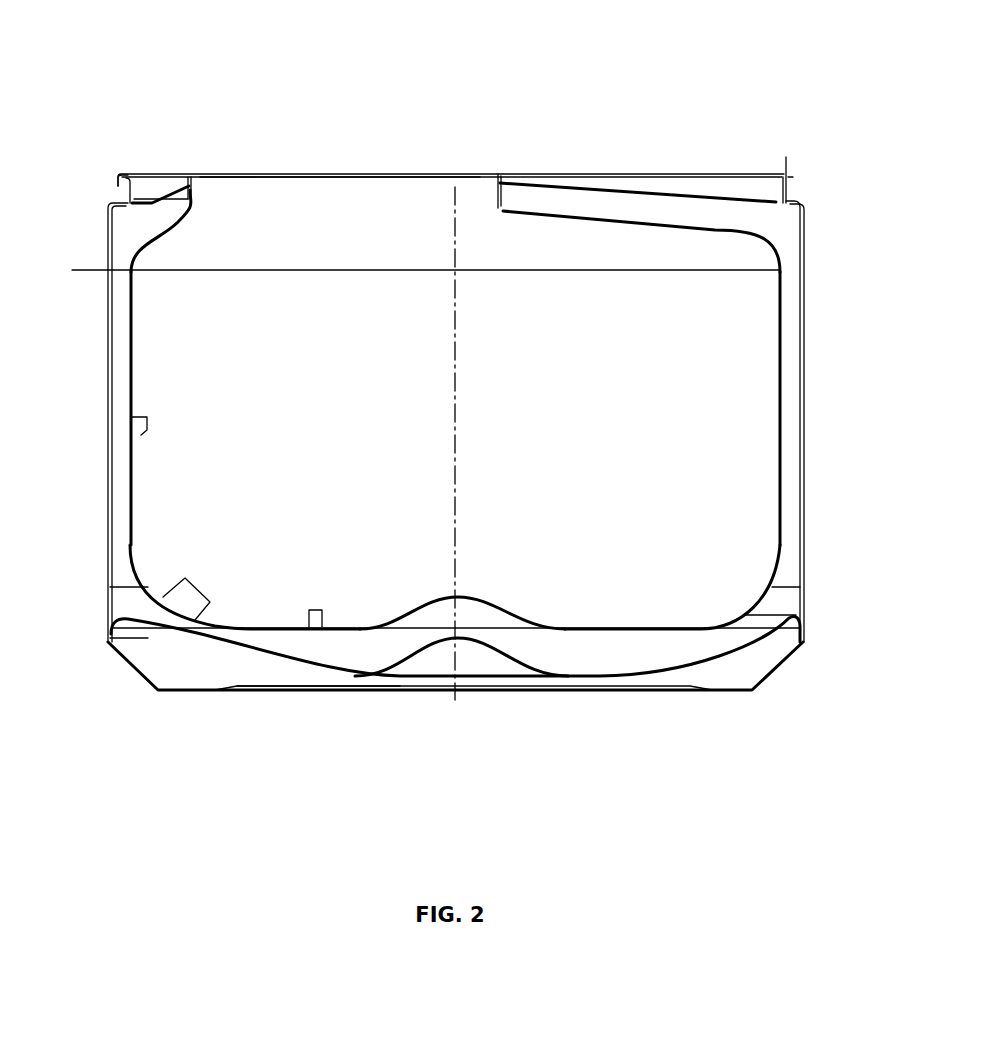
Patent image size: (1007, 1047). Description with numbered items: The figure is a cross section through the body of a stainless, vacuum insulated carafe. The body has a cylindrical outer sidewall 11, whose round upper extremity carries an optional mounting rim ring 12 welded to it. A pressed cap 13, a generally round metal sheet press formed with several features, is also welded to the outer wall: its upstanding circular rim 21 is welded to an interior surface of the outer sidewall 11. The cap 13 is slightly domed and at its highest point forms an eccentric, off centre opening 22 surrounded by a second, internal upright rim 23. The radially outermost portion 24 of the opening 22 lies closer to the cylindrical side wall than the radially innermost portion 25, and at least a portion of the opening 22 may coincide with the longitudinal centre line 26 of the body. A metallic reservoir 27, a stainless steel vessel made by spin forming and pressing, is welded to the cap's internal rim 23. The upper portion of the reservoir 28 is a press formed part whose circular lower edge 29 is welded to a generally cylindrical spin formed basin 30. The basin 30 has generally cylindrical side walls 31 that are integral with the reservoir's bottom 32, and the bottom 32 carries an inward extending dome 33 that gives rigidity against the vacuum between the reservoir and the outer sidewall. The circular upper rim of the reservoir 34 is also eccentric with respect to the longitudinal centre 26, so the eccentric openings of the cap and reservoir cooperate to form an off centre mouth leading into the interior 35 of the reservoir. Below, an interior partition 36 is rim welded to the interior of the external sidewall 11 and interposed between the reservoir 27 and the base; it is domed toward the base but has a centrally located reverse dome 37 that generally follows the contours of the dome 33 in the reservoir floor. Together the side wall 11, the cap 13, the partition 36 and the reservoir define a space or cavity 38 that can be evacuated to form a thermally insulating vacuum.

The outer sidewall 11 is at (72, 270).
The mounting rim ring 12 is at (120, 177).
The pressed cap 13 is at (657, 185).
The upstanding circular rim 21 is at (146, 186).
The opening 22 is at (429, 172).
The internal upright rim 23 is at (503, 176).
The radially outermost portion of the opening 24 is at (190, 176).
The radially innermost portion of the opening 25 is at (498, 172).
The longitudinal centre line 26 is at (457, 403).
The metallic reservoir 27 is at (283, 628).
The upper portion of the reservoir 28 is at (335, 192).
The circular lower edge 29 is at (132, 270).
The basin 30 is at (208, 600).
The side walls 31 is at (147, 433).
The bottom 32 is at (322, 627).
The inward extending dome 33 is at (467, 598).
The circular upper rim of the reservoir 34 is at (500, 190).
The interior of the reservoir 35 is at (330, 404).
The interior partition 36 is at (727, 648).
The reverse dome 37 is at (753, 222).
The cavity 38 is at (242, 633).